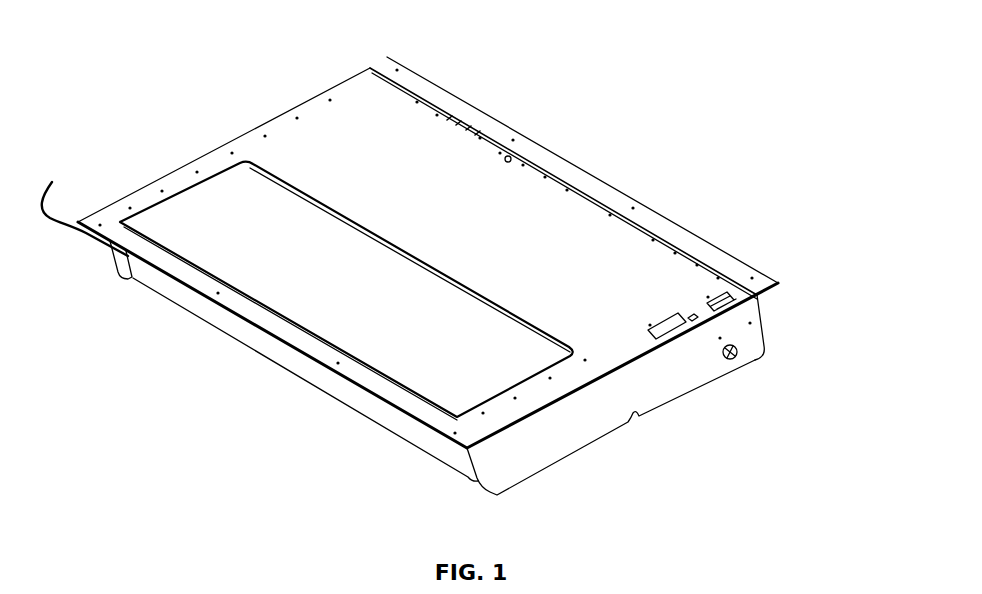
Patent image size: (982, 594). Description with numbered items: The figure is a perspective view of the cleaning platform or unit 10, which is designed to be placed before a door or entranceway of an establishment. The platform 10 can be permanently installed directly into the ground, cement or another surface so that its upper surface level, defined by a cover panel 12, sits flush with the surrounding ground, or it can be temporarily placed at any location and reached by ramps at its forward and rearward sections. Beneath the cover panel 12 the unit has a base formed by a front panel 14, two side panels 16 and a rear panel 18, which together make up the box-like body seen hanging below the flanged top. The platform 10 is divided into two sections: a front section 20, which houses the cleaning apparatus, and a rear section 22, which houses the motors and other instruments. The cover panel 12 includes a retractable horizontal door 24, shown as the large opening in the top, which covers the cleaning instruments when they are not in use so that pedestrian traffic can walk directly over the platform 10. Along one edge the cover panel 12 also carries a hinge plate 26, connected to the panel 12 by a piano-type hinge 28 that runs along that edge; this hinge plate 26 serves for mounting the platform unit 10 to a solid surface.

The cleaning platform 10 is at (619, 152).
The cover panel 12 is at (355, 192).
The front panel 14 is at (385, 422).
The side panel 16 is at (585, 512).
The rear panel 18 is at (762, 317).
The front section 20 is at (580, 430).
The rear section 22 is at (687, 367).
The retractable horizontal door 24 is at (240, 237).
The hinge plate 26 is at (478, 115).
The piano-type hinge 28 is at (372, 68).